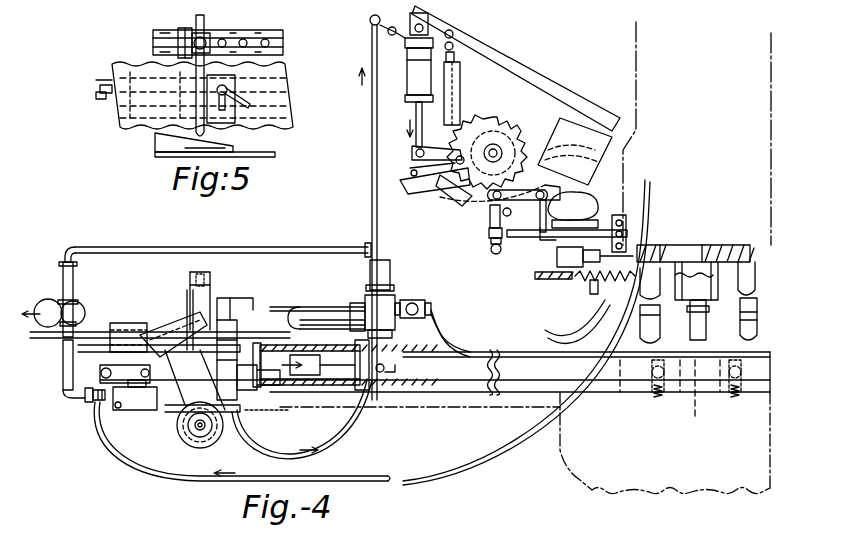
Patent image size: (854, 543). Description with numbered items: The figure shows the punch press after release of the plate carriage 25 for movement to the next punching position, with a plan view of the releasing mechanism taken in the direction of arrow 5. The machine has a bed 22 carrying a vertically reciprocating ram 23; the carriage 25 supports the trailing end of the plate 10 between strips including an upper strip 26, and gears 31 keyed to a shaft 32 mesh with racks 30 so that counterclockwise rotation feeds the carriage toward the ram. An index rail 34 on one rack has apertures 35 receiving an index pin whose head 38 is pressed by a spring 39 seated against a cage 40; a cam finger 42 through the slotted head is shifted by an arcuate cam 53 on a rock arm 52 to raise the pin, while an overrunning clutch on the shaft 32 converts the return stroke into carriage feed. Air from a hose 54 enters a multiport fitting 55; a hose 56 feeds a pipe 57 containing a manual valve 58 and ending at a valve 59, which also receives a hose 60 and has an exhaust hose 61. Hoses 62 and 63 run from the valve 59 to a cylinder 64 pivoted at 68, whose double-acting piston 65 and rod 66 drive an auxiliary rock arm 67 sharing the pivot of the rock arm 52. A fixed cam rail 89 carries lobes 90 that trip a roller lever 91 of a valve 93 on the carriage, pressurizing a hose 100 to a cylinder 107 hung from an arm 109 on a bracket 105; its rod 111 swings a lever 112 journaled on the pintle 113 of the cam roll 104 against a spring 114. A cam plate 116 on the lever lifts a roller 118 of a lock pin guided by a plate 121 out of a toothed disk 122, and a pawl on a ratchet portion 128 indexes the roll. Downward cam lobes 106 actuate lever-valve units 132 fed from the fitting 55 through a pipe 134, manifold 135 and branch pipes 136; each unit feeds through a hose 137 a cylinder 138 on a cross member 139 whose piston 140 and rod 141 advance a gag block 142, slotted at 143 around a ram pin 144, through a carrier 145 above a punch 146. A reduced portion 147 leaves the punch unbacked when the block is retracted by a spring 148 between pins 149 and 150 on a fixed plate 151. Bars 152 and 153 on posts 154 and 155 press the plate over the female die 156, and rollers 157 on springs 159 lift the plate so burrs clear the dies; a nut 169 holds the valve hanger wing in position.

In FIG. 4, the arrow 5 is at (250, 234).
In FIG. 4, the plate 10 is at (760, 352).
In FIG. 4, the bed 22 is at (592, 488).
In FIG. 4, the ram 23 is at (769, 183).
In FIG. 4, the carriage 25 is at (118, 306).
In FIG. 5, the upper strip 26 is at (112, 117).
In FIG. 4, the gear rack 30 is at (256, 418).
In FIG. 4, the gear 31 is at (226, 435).
In FIG. 4, the shaft 32 is at (196, 432).
In FIG. 5, the index rail 34 is at (250, 30).
In FIG. 5, the apertures 35 is at (283, 43).
In FIG. 4, the head 38 is at (212, 298).
In FIG. 4, the spring 39 is at (210, 283).
In FIG. 5, the cage 40 is at (205, 32).
In FIG. 4, the cage 40 is at (190, 280).
In FIG. 5, the cam finger 42 is at (205, 131).
In FIG. 5, the rock arm 52 is at (155, 155).
In FIG. 4, the rock arm 52 is at (178, 415).
In FIG. 5, the arcuate cam 53 is at (155, 143).
In FIG. 4, the arcuate cam 53 is at (162, 320).
In FIG. 4, the air hose 54 is at (648, 192).
In FIG. 4, the multiport fitting 55 is at (628, 232).
In FIG. 4, the air hose 56 is at (480, 480).
In FIG. 4, the pipe 57 is at (63, 368).
In FIG. 4, the manually operated valve 58 is at (42, 304).
In FIG. 4, the valve 59 is at (407, 285).
In FIG. 4, the air hose 60 is at (600, 333).
In FIG. 4, the exhaust hose 61 is at (432, 328).
In FIG. 4, the hose 62 is at (330, 307).
In FIG. 4, the hose 63 is at (283, 312).
In FIG. 4, the cylinder 64 is at (312, 388).
In FIG. 4, the piston 65 is at (332, 388).
In FIG. 4, the piston rod 66 is at (312, 352).
In FIG. 4, the auxiliary rock arm 67 is at (245, 382).
In FIG. 4, the pivot 68 is at (398, 370).
In FIG. 5, the cam rail 89 is at (97, 93).
In FIG. 4, the cam rail 89 is at (78, 350).
In FIG. 4, the cam lobes 90 is at (97, 364).
In FIG. 5, the lever 91 is at (96, 97).
In FIG. 4, the lever 91 is at (108, 362).
In FIG. 4, the valve 93 is at (135, 395).
In FIG. 4, the air hose 100 is at (372, 172).
In FIG. 4, the cam roll 104 is at (490, 198).
In FIG. 4, the bracket 105 is at (536, 140).
In FIG. 4, the cam lobes 106 is at (490, 218).
In FIG. 4, the cylinder 107 is at (407, 60).
In FIG. 4, the arm 109 is at (478, 38).
In FIG. 4, the rod 111 is at (416, 128).
In FIG. 4, the lever 112 is at (410, 190).
In FIG. 4, the pintle 113 is at (493, 128).
In FIG. 4, the spring 114 is at (478, 80).
In FIG. 4, the cam plate 116 is at (452, 195).
In FIG. 4, the roller 118 is at (412, 158).
In FIG. 4, the plate 121 is at (478, 135).
In FIG. 4, the toothed disk 122 is at (515, 118).
In FIG. 4, the ratchet portion 128 is at (502, 130).
In FIG. 4, the lever-valve unit 132 is at (540, 245).
In FIG. 4, the air pipe 134 is at (525, 238).
In FIG. 4, the manifold 135 is at (491, 252).
In FIG. 4, the air branch pipes 136 is at (489, 238).
In FIG. 4, the hose 137 is at (640, 146).
In FIG. 4, the cylinder 138 is at (562, 270).
In FIG. 4, the cross member 139 is at (644, 172).
In FIG. 4, the piston 140 is at (590, 288).
In FIG. 4, the rod 141 is at (604, 276).
In FIG. 4, the gag block 142 is at (655, 288).
In FIG. 4, the slot 143 is at (708, 245).
In FIG. 4, the pin 144 is at (670, 244).
In FIG. 4, the carrier 145 is at (714, 288).
In FIG. 4, the punch 146 is at (706, 325).
In FIG. 4, the reduced portion 147 is at (755, 258).
In FIG. 4, the spring 148 is at (600, 296).
In FIG. 4, the pin 149 is at (640, 325).
In FIG. 4, the pin 150 is at (563, 300).
In FIG. 4, the fixed plate 151 is at (536, 277).
In FIG. 4, the bar 152 is at (656, 338).
In FIG. 4, the bar 153 is at (702, 340).
In FIG. 4, the posts 154 is at (662, 322).
In FIG. 4, the posts 155 is at (757, 312).
In FIG. 4, the female die 156 is at (670, 402).
In FIG. 4, the rollers 157 is at (640, 392).
In FIG. 4, the springs 159 is at (656, 400).
In FIG. 5, the nut 169 is at (293, 104).
In FIG. 4, the nut 169 is at (250, 303).